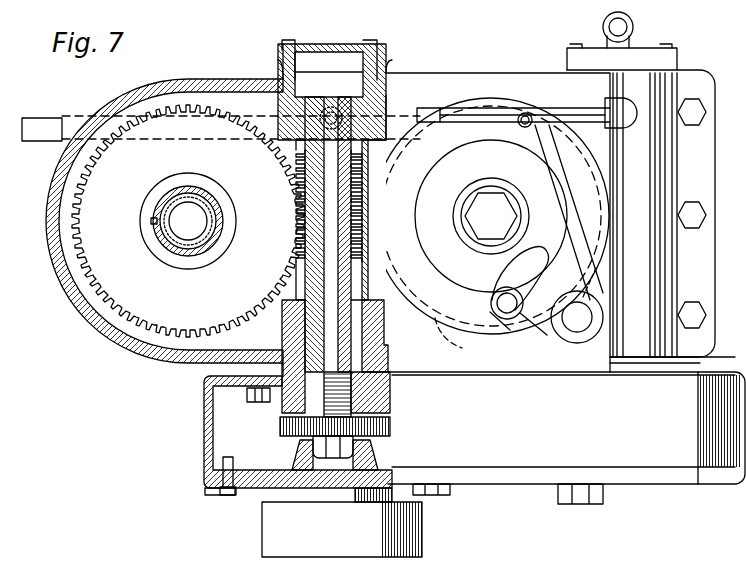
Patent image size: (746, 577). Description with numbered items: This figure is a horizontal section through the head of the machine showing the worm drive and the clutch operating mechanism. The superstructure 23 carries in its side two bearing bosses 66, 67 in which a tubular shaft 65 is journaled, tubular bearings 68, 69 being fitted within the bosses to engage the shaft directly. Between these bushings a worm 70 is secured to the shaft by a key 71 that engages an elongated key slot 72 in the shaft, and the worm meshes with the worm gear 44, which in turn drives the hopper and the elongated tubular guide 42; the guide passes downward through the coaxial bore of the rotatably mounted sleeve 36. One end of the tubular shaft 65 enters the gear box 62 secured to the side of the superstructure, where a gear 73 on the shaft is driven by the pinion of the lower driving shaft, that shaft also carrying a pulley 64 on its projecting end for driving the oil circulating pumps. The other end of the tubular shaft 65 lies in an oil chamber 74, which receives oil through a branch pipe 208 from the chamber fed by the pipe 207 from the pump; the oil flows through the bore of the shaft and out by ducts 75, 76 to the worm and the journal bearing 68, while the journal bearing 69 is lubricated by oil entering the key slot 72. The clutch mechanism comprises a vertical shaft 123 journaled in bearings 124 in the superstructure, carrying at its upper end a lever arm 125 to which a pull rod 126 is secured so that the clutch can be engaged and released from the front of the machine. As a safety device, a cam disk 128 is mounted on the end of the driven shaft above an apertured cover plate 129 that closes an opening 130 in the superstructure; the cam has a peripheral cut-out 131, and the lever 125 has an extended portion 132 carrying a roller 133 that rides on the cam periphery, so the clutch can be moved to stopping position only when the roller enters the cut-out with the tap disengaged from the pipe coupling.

The superstructure 23 is at (124, 342).
The sleeve 36 is at (201, 192).
The tubular guide 42 is at (214, 222).
The worm gear 44 is at (188, 221).
The gear box 62 is at (205, 441).
The pulley 64 is at (342, 522).
The tubular shaft 65 is at (350, 204).
The bearing boss 66 is at (385, 334).
The bearing boss 67 is at (383, 98).
The tubular bearing 68 is at (297, 278).
The tubular bearing 69 is at (296, 160).
The worm 70 is at (362, 230).
The key 71 is at (362, 214).
The key slot 72 is at (348, 324).
The gear 73 is at (280, 427).
The oil chamber 74 is at (335, 90).
The duct 75 is at (310, 214).
The duct 76 is at (290, 344).
The vertical shaft 123 is at (574, 330).
The bearing 124 is at (596, 282).
The lever arm 125 is at (560, 206).
The pull rod 126 is at (37, 141).
The cam disk 128 is at (491, 216).
The cover plate 129 is at (440, 309).
The opening 130 is at (463, 337).
The cut-out 131 is at (524, 255).
The extended portion 132 is at (540, 335).
The roller 133 is at (491, 305).
The pipe 207 is at (633, 28).
The branch pipe 208 is at (580, 108).